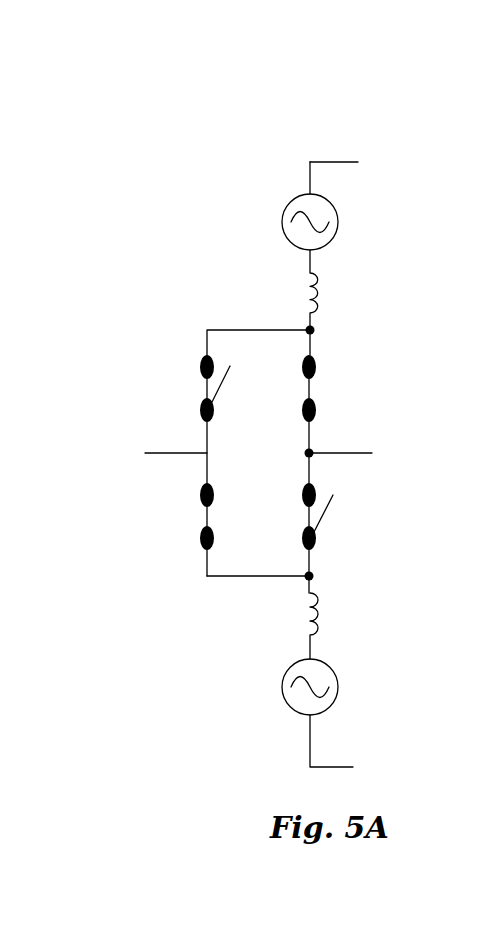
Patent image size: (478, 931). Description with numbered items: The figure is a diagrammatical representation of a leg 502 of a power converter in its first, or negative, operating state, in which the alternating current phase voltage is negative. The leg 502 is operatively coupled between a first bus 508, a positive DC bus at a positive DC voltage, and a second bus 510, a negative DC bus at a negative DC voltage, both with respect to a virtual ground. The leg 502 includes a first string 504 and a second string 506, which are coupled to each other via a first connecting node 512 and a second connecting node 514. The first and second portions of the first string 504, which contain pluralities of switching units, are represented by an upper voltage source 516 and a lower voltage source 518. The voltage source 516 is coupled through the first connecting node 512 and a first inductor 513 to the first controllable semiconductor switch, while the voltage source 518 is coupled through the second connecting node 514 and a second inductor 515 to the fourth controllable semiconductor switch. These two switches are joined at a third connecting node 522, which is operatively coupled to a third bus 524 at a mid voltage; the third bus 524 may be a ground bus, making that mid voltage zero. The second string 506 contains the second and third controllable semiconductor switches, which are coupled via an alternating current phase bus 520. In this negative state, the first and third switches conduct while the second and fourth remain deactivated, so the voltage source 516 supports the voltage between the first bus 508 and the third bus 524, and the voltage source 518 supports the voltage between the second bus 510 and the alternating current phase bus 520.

The leg 502 is at (323, 73).
The first string 504 is at (310, 178).
The second string 506 is at (206, 342).
The first bus 508 is at (340, 162).
The second bus 510 is at (330, 765).
The first connecting node 512 is at (314, 327).
The first inductor 513 is at (290, 290).
The second connecting node 514 is at (313, 572).
The second inductor 515 is at (290, 626).
The voltage source 516 is at (306, 222).
The voltage source 518 is at (306, 687).
The alternating current phase bus 520 is at (163, 452).
The third connecting node 522 is at (312, 450).
The third bus 524 is at (340, 453).